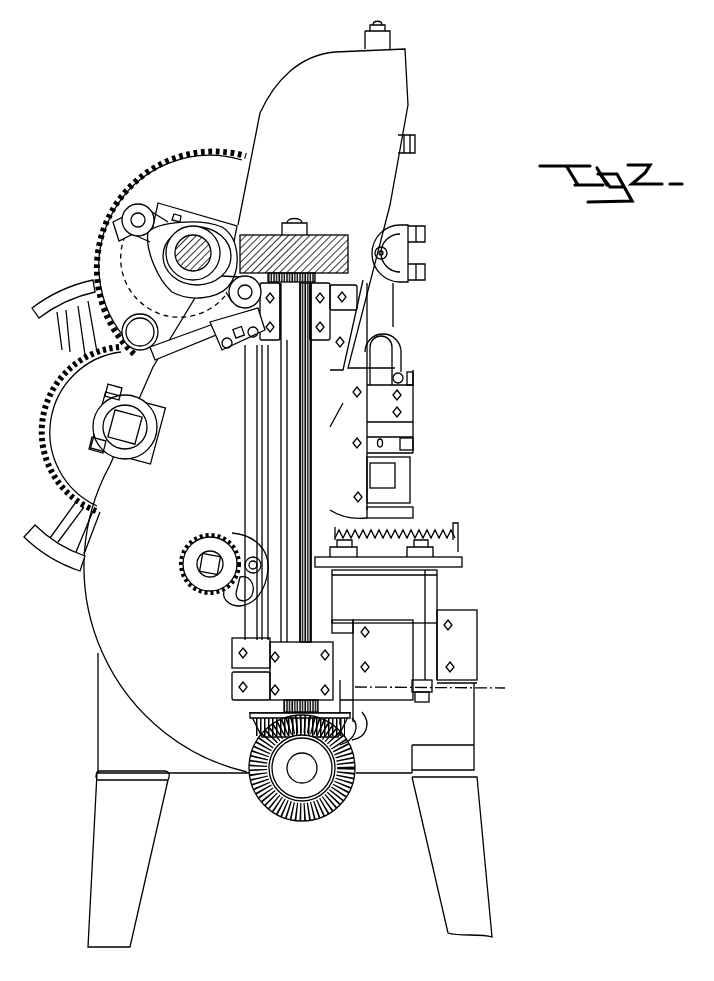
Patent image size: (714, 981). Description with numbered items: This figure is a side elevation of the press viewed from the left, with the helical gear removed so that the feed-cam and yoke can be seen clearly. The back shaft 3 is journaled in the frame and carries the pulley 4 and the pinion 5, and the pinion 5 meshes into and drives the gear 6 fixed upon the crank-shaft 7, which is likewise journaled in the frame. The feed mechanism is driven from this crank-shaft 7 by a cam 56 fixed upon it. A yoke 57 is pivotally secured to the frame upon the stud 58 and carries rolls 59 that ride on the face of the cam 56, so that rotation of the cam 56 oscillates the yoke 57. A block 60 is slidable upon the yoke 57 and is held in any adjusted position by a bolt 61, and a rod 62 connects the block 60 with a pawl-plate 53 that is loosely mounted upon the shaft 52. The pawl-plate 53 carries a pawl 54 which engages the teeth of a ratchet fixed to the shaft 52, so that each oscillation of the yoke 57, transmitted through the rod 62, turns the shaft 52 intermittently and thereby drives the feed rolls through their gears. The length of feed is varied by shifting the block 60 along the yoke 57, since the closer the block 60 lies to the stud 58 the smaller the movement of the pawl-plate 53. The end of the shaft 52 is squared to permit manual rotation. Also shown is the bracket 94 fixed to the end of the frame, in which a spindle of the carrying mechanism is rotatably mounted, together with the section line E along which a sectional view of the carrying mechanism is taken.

The back shaft 3 is at (105, 425).
The pulley 4 is at (62, 557).
The pinion 5 is at (62, 380).
The gear 6 is at (140, 170).
The crank-shaft 7 is at (199, 233).
The shaft 52 is at (193, 561).
The pawl-plate 53 is at (218, 602).
The pawl 54 is at (257, 603).
The cam 56 is at (171, 225).
The yoke 57 is at (112, 272).
The stud 58 is at (123, 331).
The rolls 59 is at (146, 200).
The block 60 is at (224, 336).
The bolt 61 is at (237, 346).
The rod 62 is at (250, 428).
The bracket 94 is at (437, 600).
The section line E is at (438, 687).